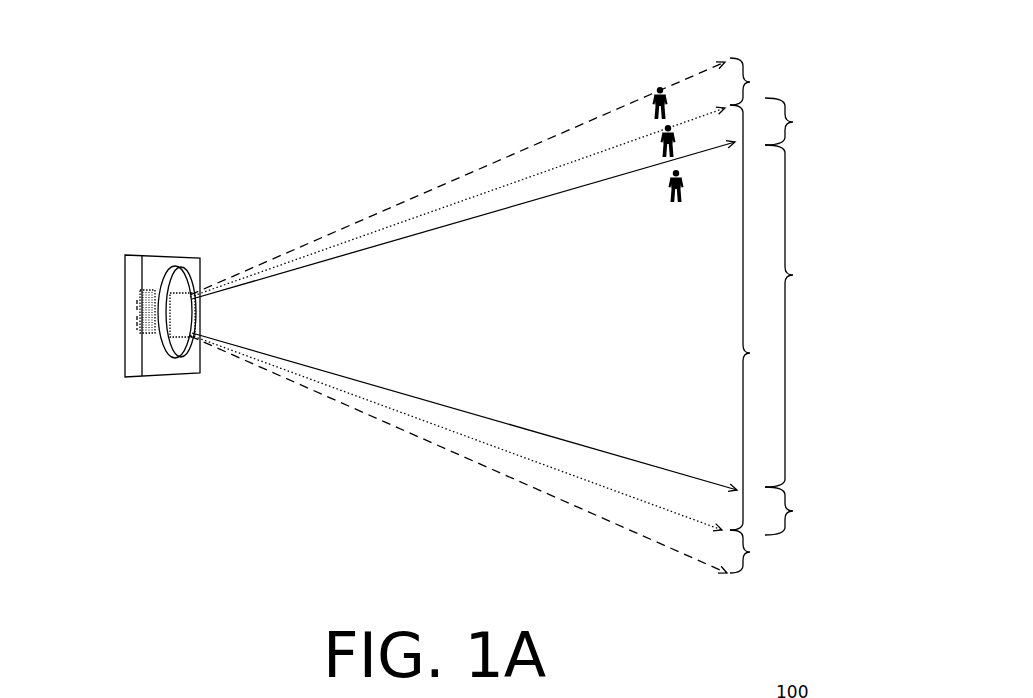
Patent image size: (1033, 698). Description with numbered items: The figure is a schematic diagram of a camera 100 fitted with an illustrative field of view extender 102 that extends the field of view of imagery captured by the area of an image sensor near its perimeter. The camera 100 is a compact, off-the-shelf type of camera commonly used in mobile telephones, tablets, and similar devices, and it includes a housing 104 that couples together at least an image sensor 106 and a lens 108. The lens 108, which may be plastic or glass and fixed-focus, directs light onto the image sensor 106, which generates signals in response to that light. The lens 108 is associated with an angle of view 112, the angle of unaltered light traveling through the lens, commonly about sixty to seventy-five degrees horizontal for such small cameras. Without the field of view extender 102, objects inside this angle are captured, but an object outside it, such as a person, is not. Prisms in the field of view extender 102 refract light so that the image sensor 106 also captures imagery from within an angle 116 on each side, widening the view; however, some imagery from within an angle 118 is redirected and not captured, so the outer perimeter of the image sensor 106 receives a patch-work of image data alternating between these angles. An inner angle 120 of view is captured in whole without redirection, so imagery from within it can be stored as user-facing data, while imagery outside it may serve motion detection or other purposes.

The camera 100 is at (125, 183).
The field of view (FOV) extender 102 is at (190, 280).
The housing 104 is at (127, 255).
The image sensor 106 is at (139, 300).
The lens 108 is at (163, 352).
The angle of view 112 is at (737, 372).
The angle φ 116 is at (775, 58).
The angle θ 118 is at (803, 96).
The angle β of view 120 is at (797, 246).